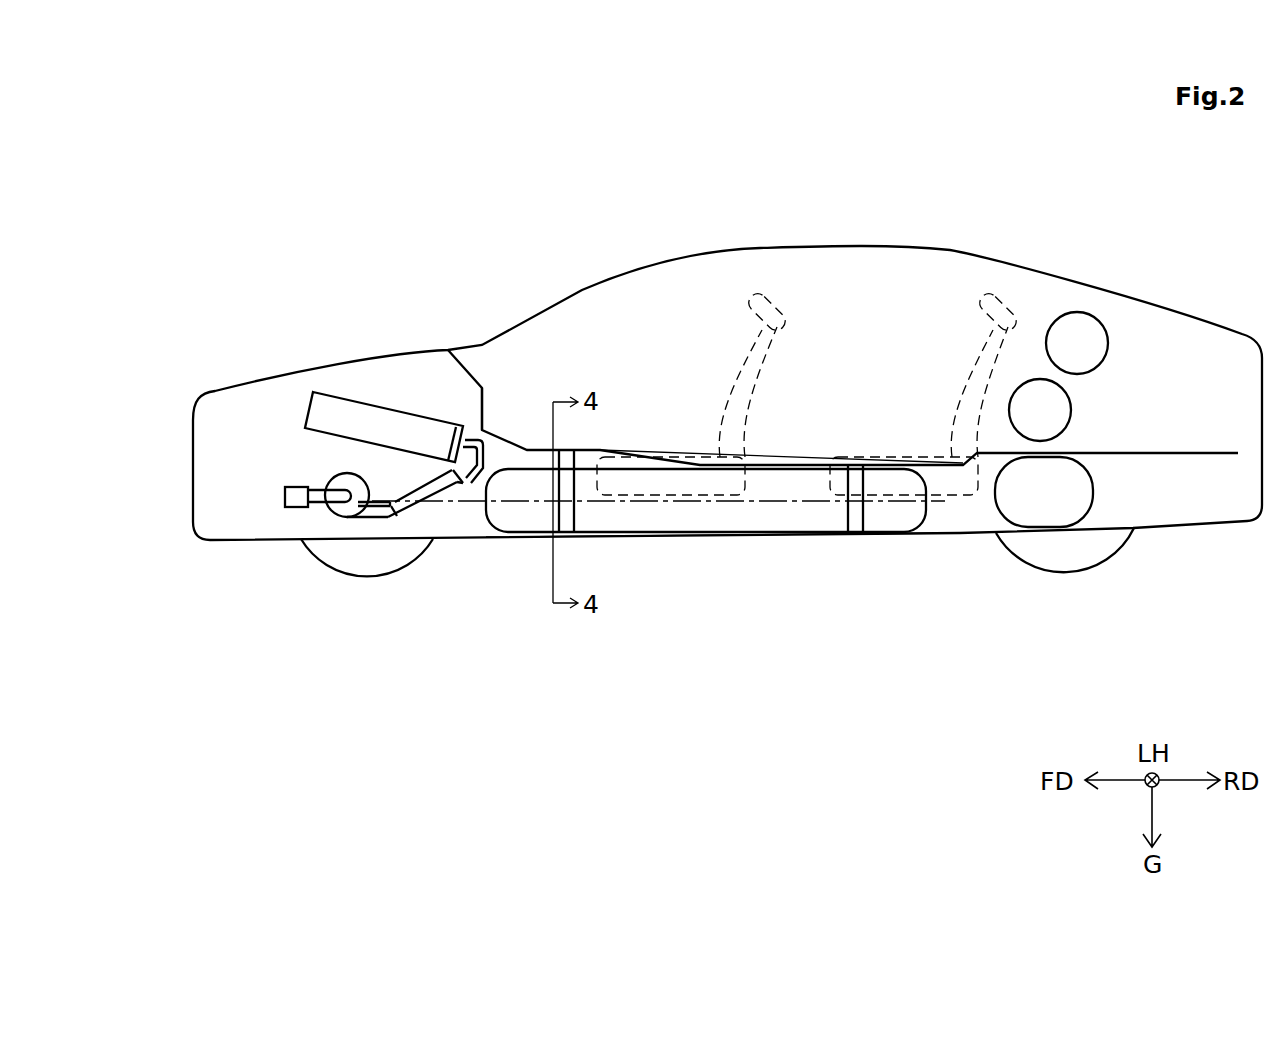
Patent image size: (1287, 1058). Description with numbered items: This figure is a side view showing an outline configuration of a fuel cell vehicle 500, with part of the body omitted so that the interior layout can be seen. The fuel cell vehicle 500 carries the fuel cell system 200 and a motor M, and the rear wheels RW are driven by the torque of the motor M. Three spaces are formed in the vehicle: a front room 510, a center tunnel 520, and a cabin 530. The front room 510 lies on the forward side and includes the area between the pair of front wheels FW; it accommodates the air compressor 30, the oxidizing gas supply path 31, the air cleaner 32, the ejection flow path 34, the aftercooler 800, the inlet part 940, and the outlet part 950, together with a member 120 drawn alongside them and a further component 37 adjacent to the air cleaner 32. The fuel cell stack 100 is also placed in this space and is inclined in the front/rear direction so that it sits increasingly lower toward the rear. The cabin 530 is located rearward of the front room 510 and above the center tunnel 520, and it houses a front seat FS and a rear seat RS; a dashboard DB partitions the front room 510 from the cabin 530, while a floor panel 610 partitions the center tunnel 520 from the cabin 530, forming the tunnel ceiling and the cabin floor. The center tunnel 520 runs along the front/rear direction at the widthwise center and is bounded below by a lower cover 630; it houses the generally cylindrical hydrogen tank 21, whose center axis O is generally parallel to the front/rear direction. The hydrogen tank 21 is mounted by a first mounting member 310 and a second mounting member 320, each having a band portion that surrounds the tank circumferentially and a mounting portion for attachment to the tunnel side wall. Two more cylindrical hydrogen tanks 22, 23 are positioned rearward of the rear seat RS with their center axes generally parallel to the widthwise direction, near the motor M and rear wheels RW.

The fuel cell vehicle 500 is at (863, 248).
The front room 510 is at (262, 424).
The cabin 530 is at (838, 296).
The center tunnel 520 is at (936, 515).
The fuel cell system 200 is at (288, 403).
The fuel cell stack 100 is at (333, 393).
The bracket 120 is at (465, 440).
The outlet part 950 is at (461, 447).
The air cleaner 32 is at (285, 496).
The rod 37 is at (311, 507).
The air compressor 30 is at (344, 516).
The ejection flow path 34 is at (378, 517).
The inlet part 940 is at (397, 512).
The aftercooler 800 is at (418, 497).
The oxidizing gas supply path 31 is at (441, 483).
The hydrogen tank 21 is at (735, 520).
The first mounting member 310 is at (567, 515).
The second mounting member 320 is at (852, 508).
The floor panel 610 is at (795, 463).
The lower cover 630 is at (888, 537).
The hydrogen tank 22 is at (1035, 378).
The hydrogen tank 23 is at (1080, 312).
The front wheels FW is at (387, 576).
The rear wheels RW is at (1103, 565).
The motor M is at (1093, 498).
The front seat FS is at (743, 367).
The rear seat RS is at (975, 367).
The dashboard DB is at (483, 388).
The center axis O is at (660, 503).